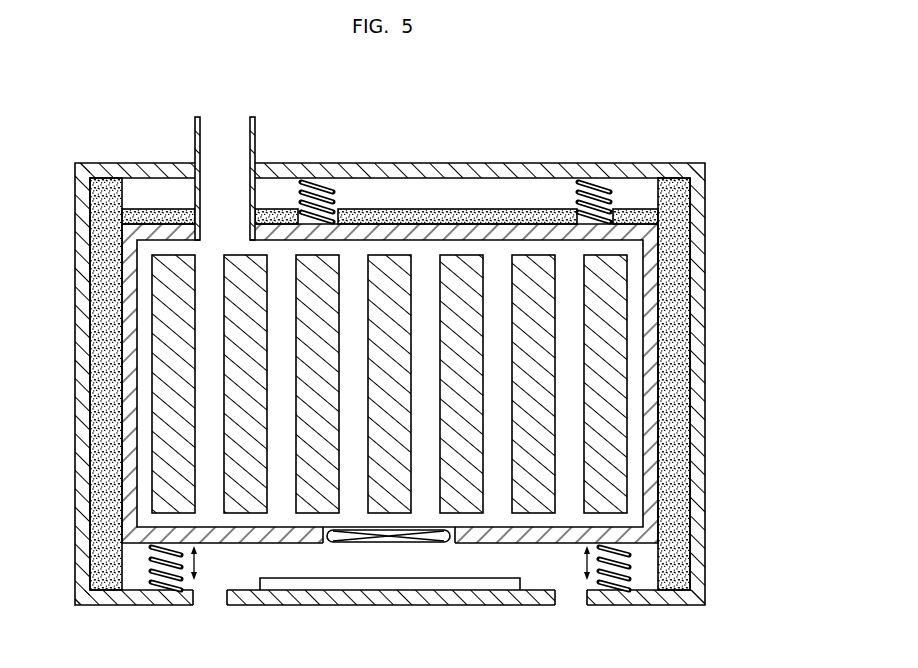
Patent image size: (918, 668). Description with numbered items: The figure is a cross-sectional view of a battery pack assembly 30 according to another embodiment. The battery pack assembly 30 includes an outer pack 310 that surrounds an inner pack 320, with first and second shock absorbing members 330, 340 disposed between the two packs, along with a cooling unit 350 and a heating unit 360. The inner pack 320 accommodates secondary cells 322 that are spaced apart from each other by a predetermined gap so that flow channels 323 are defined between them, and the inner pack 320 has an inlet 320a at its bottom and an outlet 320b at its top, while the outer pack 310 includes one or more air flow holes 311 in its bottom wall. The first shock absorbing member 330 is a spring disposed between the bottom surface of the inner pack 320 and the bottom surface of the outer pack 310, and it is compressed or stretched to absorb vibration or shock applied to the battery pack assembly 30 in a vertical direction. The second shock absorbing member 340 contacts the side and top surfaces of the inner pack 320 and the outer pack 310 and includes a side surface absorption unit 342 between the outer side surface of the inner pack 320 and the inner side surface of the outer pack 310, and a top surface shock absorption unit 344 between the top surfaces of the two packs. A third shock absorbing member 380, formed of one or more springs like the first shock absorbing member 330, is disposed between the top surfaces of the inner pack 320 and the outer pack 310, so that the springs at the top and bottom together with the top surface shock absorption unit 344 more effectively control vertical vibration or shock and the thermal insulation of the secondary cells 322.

The battery pack assembly 30 is at (697, 91).
The outer pack 310 is at (706, 225).
The air flow holes 311 is at (226, 597).
The inner pack 320 is at (657, 320).
The inlet 320a is at (327, 532).
The outlet 320b is at (225, 198).
The secondary cells 322 is at (538, 390).
The flow channels 323 is at (572, 457).
The first shock absorbing member 330 is at (172, 578).
The second shock absorbing member 340 is at (392, 335).
The side surface absorption unit 342 is at (105, 216).
The top surface shock absorption unit 344 is at (390, 175).
The cooling unit 350 is at (438, 532).
The heating unit 360 is at (498, 580).
The third shock absorbing member 380 is at (336, 188).